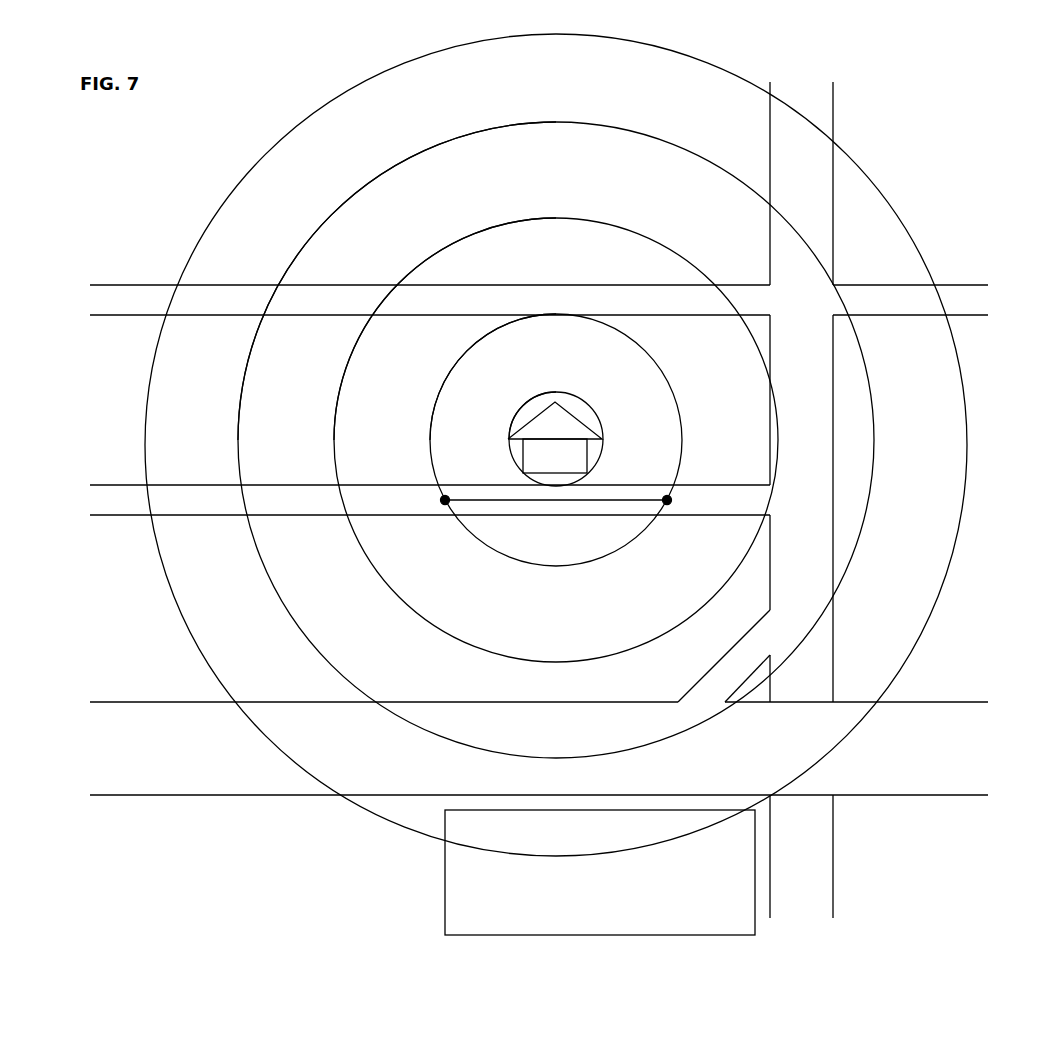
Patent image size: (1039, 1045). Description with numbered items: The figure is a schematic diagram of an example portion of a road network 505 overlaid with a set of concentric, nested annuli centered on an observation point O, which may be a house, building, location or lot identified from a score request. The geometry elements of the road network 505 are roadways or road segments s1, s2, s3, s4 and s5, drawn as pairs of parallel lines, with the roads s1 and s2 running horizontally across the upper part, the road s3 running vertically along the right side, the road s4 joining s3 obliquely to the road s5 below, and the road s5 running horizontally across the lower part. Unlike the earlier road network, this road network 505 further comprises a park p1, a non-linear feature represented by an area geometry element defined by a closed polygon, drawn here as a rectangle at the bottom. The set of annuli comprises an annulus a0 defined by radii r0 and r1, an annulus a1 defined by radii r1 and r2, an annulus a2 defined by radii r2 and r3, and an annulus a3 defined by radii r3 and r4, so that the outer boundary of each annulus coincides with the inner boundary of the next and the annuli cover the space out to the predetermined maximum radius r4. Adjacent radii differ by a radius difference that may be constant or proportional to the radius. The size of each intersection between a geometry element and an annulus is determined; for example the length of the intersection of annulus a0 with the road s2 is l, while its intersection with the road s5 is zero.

The road network 505 is at (570, 435).
The radius r4 is at (556, 440).
The radius r3 is at (556, 440).
The radius r2 is at (556, 440).
The radius r1 is at (556, 440).
The radius r0 is at (556, 440).
The observation point O is at (580, 421).
The length of intersection l is at (556, 500).
The geometry element s1 is at (539, 300).
The geometry element s2 is at (430, 500).
The geometry element s3 is at (801, 500).
The geometry element s4 is at (724, 656).
The geometry element s5 is at (539, 748).
The park p1 is at (600, 872).
The annulus a3 is at (372, 300).
The annulus a2 is at (418, 348).
The annulus a1 is at (465, 396).
The annulus a0 is at (511, 435).